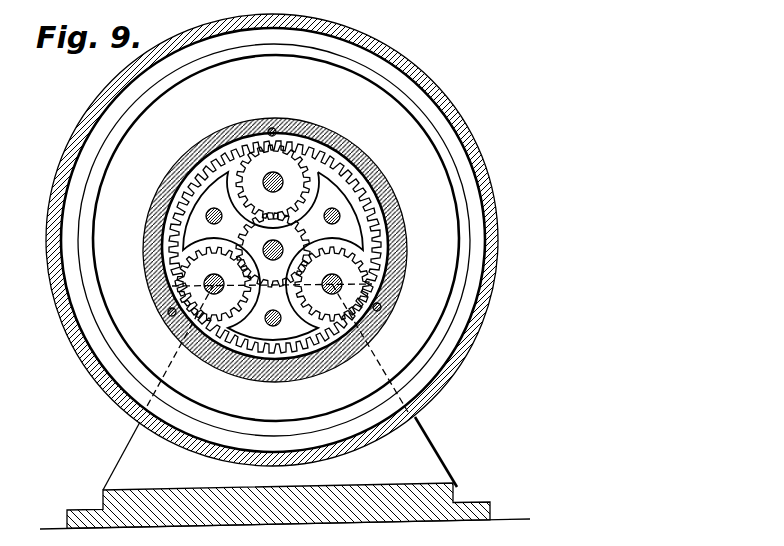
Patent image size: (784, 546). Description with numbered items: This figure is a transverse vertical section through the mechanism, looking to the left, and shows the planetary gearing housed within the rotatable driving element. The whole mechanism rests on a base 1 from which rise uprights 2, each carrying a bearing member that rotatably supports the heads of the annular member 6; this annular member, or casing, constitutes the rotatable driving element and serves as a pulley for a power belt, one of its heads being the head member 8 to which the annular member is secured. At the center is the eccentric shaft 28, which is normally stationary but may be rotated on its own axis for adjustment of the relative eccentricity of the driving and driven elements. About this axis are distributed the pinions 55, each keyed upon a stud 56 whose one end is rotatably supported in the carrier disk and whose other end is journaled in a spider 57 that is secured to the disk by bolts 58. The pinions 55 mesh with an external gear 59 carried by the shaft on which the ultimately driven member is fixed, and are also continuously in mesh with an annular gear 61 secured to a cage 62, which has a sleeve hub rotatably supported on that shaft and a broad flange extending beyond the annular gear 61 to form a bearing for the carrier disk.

The base 1 is at (450, 506).
The upright 2 is at (418, 452).
The annular member 6 is at (407, 62).
The head member 8 is at (161, 84).
The shaft 28 is at (230, 242).
The pinion 55 is at (280, 158).
The stud 56 is at (276, 178).
The spider 57 is at (323, 185).
The bolt 58 is at (210, 214).
The external gear 59 is at (257, 227).
The annular gear 61 is at (296, 358).
The cage 62 is at (246, 120).